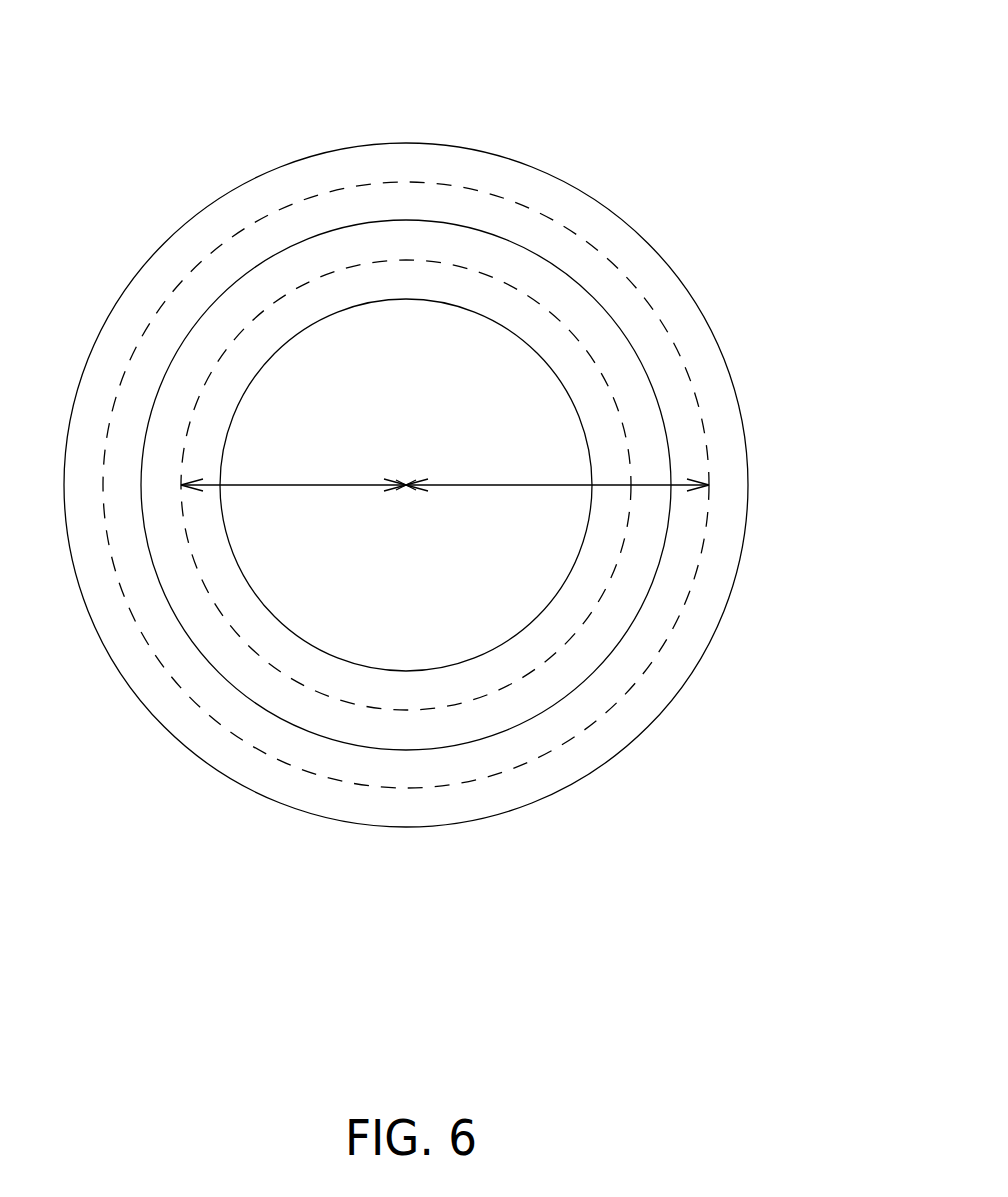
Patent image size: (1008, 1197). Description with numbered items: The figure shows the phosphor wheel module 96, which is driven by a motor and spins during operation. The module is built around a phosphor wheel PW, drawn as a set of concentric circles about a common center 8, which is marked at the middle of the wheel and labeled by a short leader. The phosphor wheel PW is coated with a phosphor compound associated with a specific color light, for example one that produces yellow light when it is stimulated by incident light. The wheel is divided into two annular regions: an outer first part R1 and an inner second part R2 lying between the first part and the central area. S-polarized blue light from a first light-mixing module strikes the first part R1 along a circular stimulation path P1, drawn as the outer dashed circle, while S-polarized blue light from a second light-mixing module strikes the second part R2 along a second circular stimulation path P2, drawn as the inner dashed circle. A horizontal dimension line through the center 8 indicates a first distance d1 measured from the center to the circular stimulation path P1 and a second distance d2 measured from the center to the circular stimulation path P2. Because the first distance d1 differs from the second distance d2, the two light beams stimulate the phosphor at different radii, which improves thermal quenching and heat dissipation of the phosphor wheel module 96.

The phosphor wheel module 96 is at (657, 66).
The first part R1 is at (627, 242).
The second part R2 is at (615, 350).
The circular stimulation path P1 is at (587, 727).
The circular stimulation path P2 is at (481, 696).
The phosphor wheel PW is at (430, 607).
The center 8 is at (406, 477).
The first distance d1 is at (557, 471).
The second distance d2 is at (293, 471).